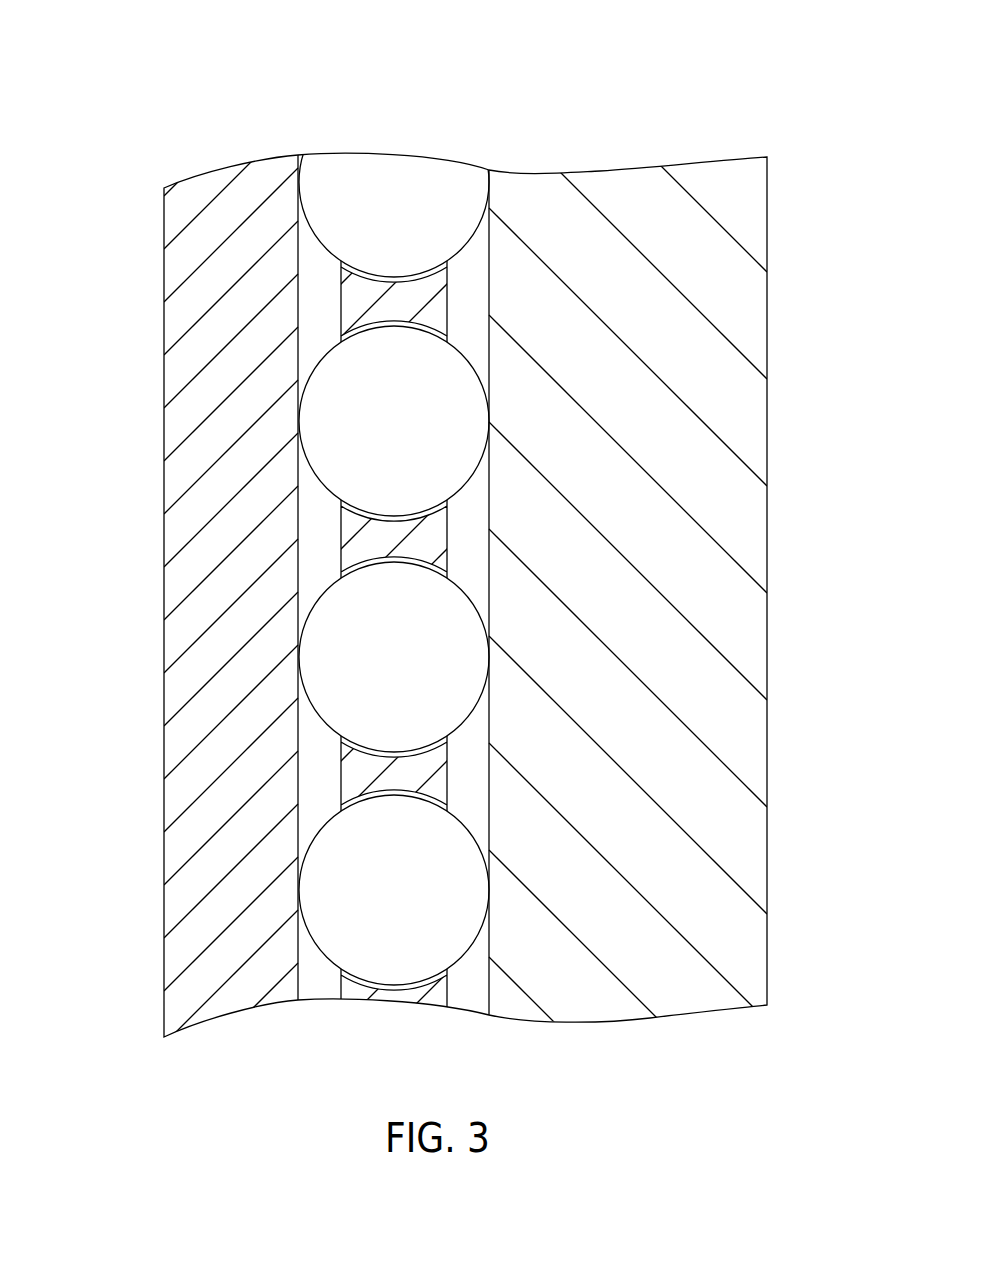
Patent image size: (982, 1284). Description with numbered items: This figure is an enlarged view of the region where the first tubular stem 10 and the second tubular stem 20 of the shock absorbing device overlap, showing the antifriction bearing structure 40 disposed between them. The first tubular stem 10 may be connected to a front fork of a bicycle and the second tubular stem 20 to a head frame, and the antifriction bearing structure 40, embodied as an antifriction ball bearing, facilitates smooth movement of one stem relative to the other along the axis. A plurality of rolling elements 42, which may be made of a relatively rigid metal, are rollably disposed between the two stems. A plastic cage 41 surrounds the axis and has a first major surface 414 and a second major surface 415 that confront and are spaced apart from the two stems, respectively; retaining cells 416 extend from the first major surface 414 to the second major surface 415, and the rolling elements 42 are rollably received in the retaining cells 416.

The first tubular stem 10 is at (768, 515).
The second tubular stem 20 is at (152, 535).
The antifriction bearing structure 40 is at (447, 575).
The cage 41 is at (323, 204).
The rolling elements 42 is at (455, 400).
The first major surface 414 is at (448, 310).
The second major surface 415 is at (340, 285).
The retaining cells 416 is at (380, 320).